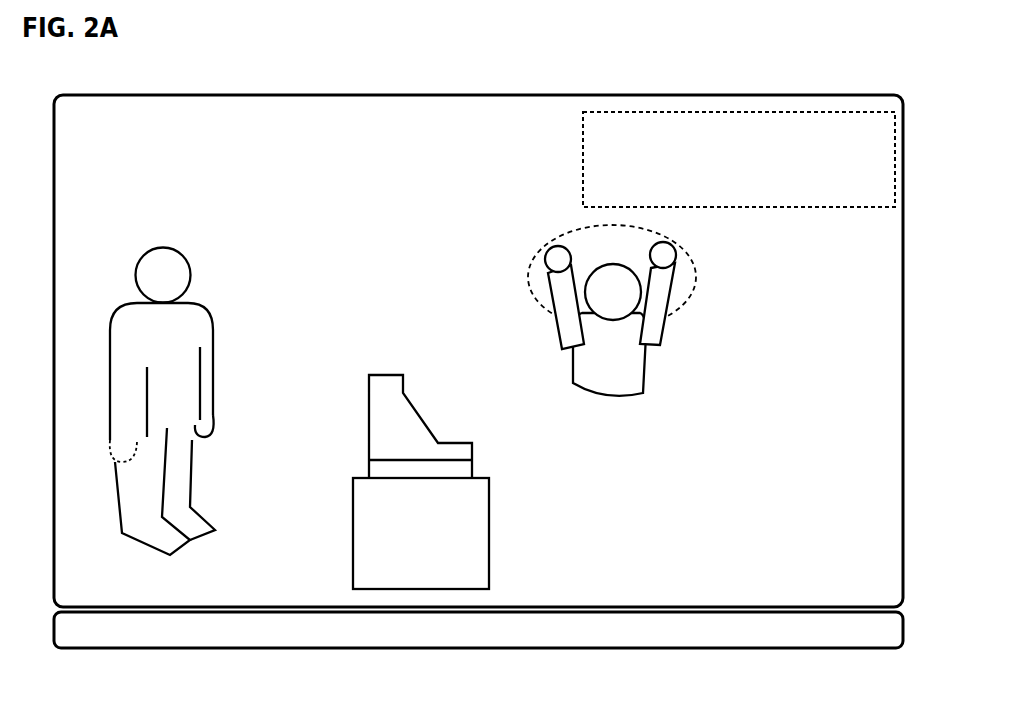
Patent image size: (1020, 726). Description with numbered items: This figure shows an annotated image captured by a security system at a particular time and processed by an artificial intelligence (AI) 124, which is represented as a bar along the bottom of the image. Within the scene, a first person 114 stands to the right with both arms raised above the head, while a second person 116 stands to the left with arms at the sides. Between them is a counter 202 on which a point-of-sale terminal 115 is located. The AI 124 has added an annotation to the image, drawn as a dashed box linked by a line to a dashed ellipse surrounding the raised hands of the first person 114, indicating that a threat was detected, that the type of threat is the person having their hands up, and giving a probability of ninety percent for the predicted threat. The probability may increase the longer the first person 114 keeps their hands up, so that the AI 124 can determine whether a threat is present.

The artificial intelligence (AI) 124 is at (655, 641).
The person 116 is at (228, 588).
The person 114 is at (677, 432).
The counter 202 is at (440, 560).
The point-of-sale terminal 115 is at (420, 451).